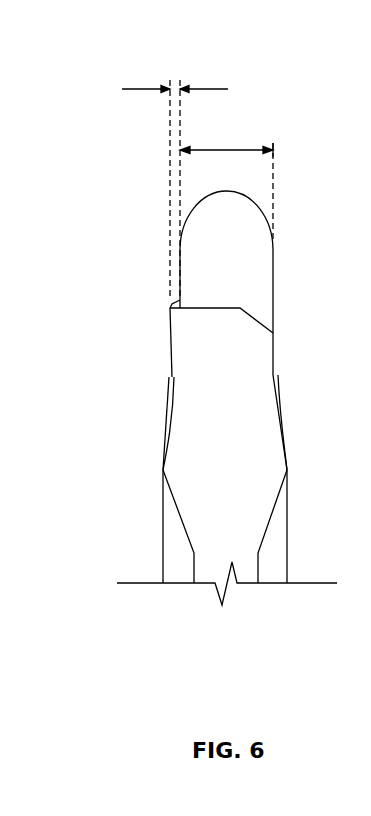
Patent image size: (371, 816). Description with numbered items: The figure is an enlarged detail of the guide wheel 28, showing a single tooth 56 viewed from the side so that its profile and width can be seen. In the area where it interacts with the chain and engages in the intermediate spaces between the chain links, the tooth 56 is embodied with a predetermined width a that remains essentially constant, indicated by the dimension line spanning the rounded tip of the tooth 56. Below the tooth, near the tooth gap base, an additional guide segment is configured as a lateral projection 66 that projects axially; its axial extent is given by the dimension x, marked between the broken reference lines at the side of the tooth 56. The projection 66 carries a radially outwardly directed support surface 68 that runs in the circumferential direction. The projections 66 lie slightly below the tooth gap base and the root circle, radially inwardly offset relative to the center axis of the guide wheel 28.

The guide wheel 28 is at (271, 622).
The tooth 56 is at (258, 226).
The projection 66 is at (172, 340).
The support surface 68 is at (169, 300).
The dimension of the lateral projection x is at (150, 88).
The width of the tooth a is at (222, 150).